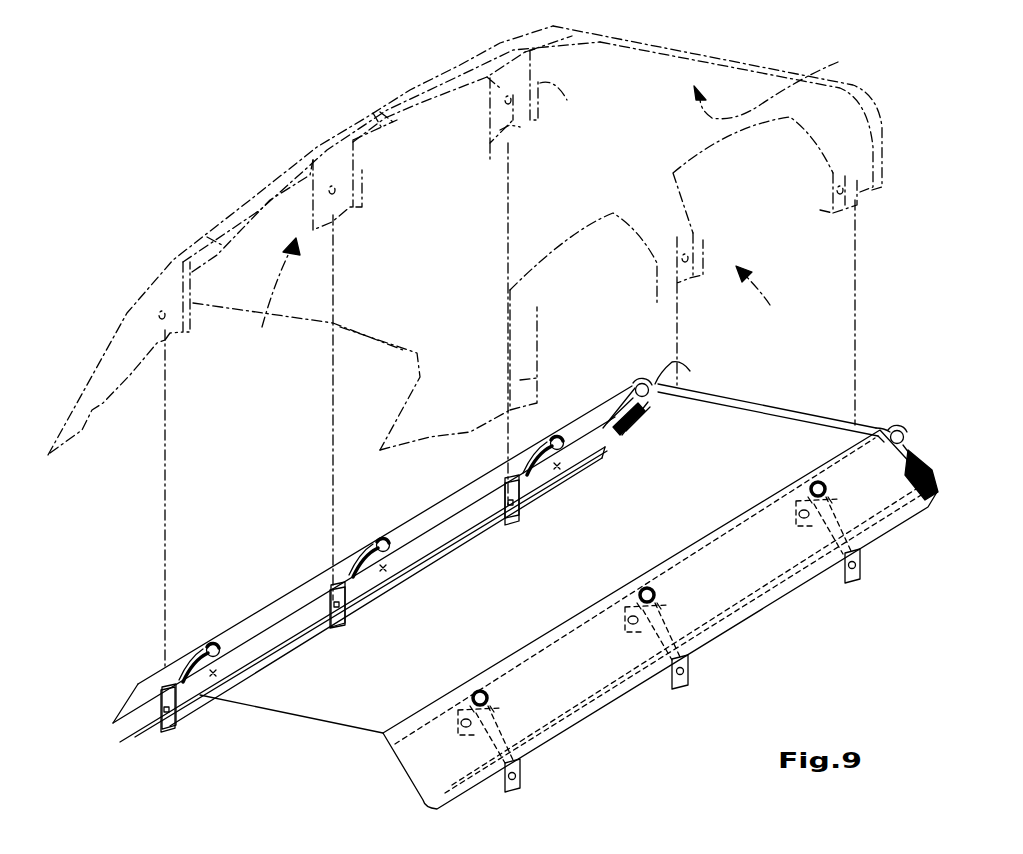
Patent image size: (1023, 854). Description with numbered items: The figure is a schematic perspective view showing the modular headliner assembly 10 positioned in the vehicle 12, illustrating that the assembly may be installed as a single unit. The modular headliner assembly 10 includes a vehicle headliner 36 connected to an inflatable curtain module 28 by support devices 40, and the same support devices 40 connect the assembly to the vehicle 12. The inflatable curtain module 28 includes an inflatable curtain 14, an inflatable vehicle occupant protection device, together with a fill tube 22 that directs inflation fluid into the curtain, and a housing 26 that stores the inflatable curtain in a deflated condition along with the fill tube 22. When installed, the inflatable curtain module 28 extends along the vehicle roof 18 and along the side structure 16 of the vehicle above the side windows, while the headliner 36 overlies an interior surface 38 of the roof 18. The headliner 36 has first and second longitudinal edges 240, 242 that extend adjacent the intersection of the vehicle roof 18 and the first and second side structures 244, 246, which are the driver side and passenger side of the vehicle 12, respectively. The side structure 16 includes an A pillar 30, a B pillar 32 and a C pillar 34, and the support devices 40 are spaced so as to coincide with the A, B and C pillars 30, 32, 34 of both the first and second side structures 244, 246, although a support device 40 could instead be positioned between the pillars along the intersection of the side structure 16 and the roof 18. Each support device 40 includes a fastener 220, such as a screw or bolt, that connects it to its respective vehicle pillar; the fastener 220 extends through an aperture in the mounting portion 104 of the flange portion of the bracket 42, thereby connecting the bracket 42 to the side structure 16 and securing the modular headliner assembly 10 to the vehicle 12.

The modular headliner assembly 10 is at (290, 498).
The vehicle 12 is at (392, 72).
The inflatable curtain 14 is at (632, 425).
The side structure 16 is at (513, 233).
The vehicle roof 18 is at (728, 62).
The fill tube 22 is at (920, 420).
The housing 26 is at (415, 528).
The inflatable curtain module 28 is at (640, 372).
The A pillar 30 is at (833, 175).
The B pillar 32 is at (360, 172).
The C pillar 34 is at (153, 332).
The vehicle headliner 36 is at (293, 707).
The interior surface 38 is at (780, 85).
The support device 40 is at (515, 620).
The bracket 42 is at (185, 676).
The mounting portion 104 is at (172, 728).
The fastener 220 is at (163, 712).
The first longitudinal edge 240 is at (745, 628).
The second longitudinal edge 242 is at (300, 632).
The first side structure 244 is at (753, 225).
The second side structure 246 is at (425, 281).